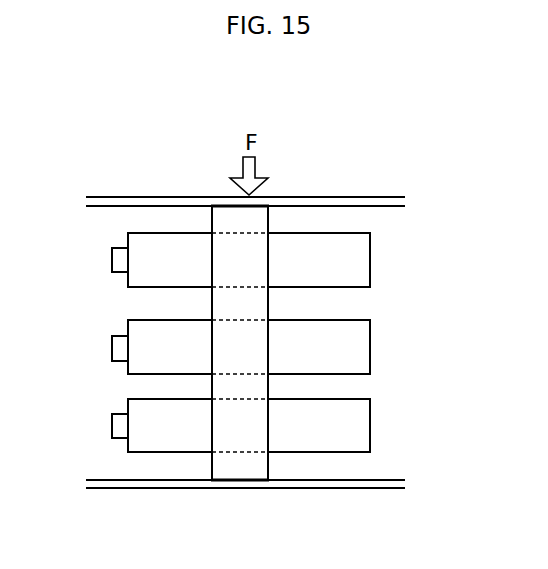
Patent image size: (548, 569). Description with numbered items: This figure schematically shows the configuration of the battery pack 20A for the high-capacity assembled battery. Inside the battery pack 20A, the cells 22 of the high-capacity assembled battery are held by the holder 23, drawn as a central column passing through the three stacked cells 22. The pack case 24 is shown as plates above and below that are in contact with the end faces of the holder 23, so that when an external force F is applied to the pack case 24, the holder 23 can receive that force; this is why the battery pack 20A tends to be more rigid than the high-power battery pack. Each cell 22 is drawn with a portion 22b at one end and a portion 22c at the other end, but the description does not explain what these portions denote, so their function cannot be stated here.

The battery pack 20A is at (445, 164).
The cell 22 is at (324, 273).
The cell terminal (left end) 22b is at (119, 262).
The cell end portion (right end) 22c is at (371, 262).
The holder 23 is at (231, 466).
The pack case 24 is at (322, 196).